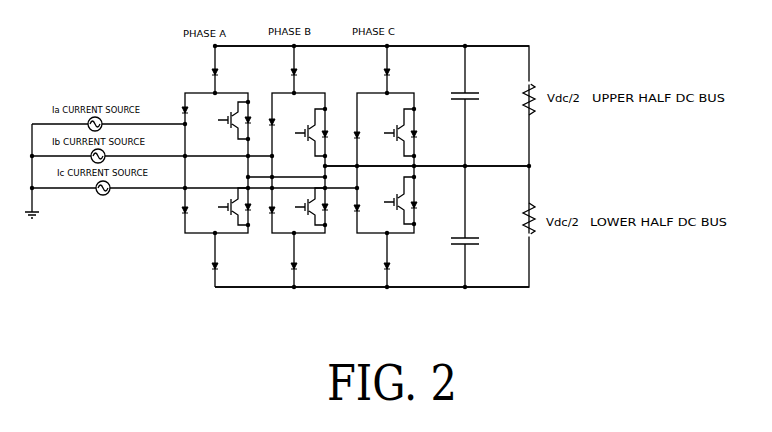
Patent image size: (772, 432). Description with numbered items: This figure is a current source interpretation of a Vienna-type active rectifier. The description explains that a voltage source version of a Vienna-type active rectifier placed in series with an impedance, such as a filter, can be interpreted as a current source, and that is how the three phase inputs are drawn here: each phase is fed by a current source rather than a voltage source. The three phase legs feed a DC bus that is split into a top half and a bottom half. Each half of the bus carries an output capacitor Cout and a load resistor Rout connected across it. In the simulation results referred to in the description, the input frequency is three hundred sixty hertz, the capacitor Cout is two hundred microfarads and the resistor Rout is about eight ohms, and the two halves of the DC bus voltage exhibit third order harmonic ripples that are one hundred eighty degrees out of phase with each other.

The output capacitor Cout is at (451, 166).
The output resistor Rout is at (511, 174).